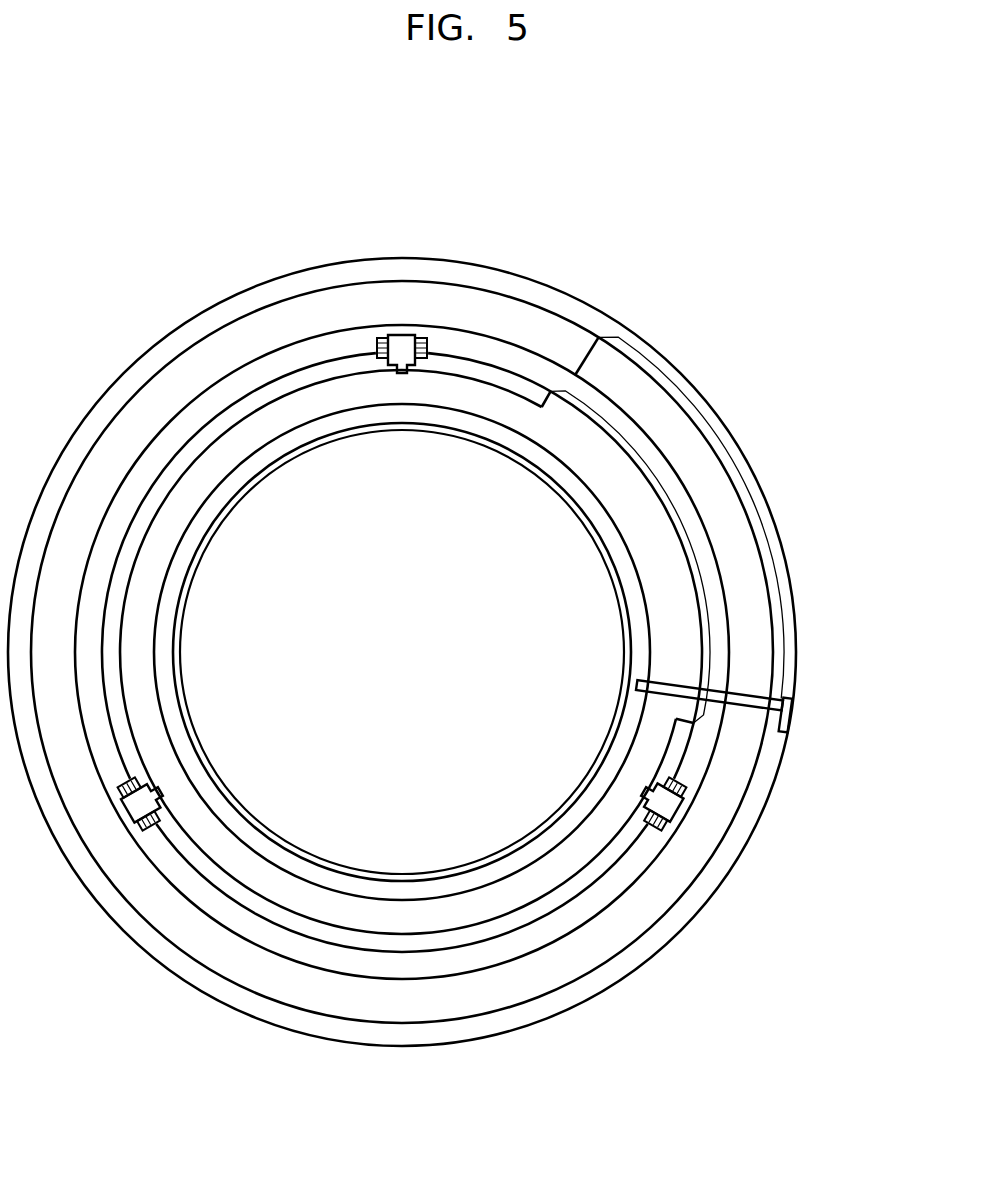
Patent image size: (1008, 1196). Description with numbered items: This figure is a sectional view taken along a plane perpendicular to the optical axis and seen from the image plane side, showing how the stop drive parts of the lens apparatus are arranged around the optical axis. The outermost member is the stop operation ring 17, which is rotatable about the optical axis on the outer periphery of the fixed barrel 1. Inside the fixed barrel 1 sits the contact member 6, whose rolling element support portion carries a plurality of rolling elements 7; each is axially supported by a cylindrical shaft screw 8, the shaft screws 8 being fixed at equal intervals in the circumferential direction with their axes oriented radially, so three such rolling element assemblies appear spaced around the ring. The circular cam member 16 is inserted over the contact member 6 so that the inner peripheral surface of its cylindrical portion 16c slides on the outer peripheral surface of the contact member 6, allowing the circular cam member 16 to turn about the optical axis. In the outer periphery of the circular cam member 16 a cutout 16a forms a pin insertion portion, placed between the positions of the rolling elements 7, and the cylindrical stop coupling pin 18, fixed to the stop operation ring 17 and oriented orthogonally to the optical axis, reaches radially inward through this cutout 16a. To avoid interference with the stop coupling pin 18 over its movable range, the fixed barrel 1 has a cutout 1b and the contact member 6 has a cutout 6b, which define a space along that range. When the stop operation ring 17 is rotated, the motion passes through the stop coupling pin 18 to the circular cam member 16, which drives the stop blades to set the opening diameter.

The fixed barrel 1 is at (735, 780).
The cutout 1b is at (650, 405).
The contact member 6 is at (513, 385).
The cutout 6b is at (695, 535).
The rolling elements 7 is at (428, 347).
The shaft screws 8 is at (403, 338).
The circular cam member 16 is at (670, 625).
The cutout 16a is at (637, 687).
The cylindrical portion 16c is at (617, 585).
The stop operation ring 17 is at (730, 855).
The stop coupling pin 18 is at (792, 712).